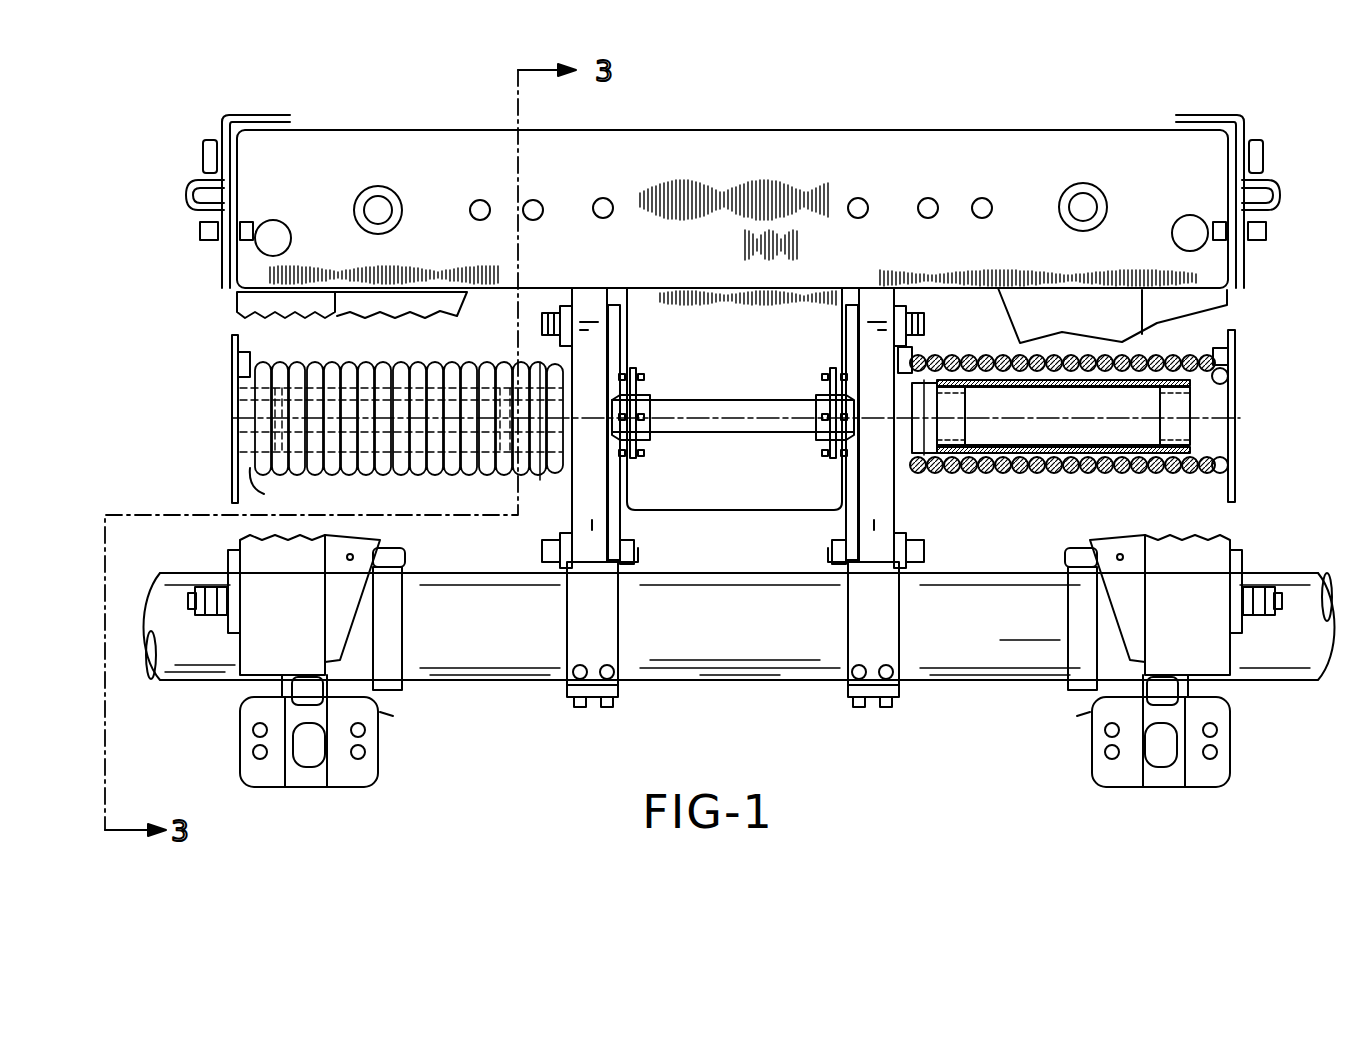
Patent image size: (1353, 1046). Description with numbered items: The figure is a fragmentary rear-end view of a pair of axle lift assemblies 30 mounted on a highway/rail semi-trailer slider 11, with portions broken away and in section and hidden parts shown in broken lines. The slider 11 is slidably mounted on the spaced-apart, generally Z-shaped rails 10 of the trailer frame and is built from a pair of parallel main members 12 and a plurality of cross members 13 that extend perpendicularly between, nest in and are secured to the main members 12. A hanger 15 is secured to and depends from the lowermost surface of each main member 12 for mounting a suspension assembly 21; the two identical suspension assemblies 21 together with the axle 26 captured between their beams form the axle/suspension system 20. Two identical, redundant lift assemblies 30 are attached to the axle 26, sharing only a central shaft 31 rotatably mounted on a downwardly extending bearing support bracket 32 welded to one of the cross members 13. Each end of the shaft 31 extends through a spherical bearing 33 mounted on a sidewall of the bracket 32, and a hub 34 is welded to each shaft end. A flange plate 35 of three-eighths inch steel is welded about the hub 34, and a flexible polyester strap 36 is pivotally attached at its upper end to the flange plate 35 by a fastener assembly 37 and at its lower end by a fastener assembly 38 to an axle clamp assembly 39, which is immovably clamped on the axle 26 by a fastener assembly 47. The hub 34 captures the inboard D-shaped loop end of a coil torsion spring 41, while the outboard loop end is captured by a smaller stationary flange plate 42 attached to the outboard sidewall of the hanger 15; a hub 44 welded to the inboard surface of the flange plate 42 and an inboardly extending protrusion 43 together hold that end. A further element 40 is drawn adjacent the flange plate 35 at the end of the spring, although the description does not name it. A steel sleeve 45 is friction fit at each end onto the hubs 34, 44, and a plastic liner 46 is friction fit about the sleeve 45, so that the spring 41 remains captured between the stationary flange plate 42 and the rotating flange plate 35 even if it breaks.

The rails 10 is at (232, 118).
The slider 11 is at (720, 122).
The main members 12 is at (292, 118).
The cross members 13 is at (826, 130).
The hanger 15 is at (290, 305).
The axle/suspension system 20 is at (748, 690).
The suspension assembly 21 is at (245, 533).
The axle 26 is at (1030, 660).
The axle lift assembly 30 is at (741, 429).
The central shaft 31 is at (736, 398).
The bearing support bracket 32 is at (730, 492).
The spherical bearing 33 is at (640, 400).
The hub 34 is at (541, 478).
The flange plate 35 is at (568, 305).
The strap 36 is at (592, 520).
The fastener assembly 37 is at (614, 305).
The fastener assembly 38 is at (632, 553).
The axle clamp assembly 39 is at (563, 621).
The nut 40 is at (556, 360).
The coil torsion spring 41 is at (470, 465).
The stationary flange plate 42 is at (232, 444).
The protrusion 43 is at (240, 358).
The hub 44 is at (264, 494).
The steel sleeve 45 is at (1125, 428).
The plastic liner 46 is at (1035, 452).
The fastener assembly 47 is at (575, 706).